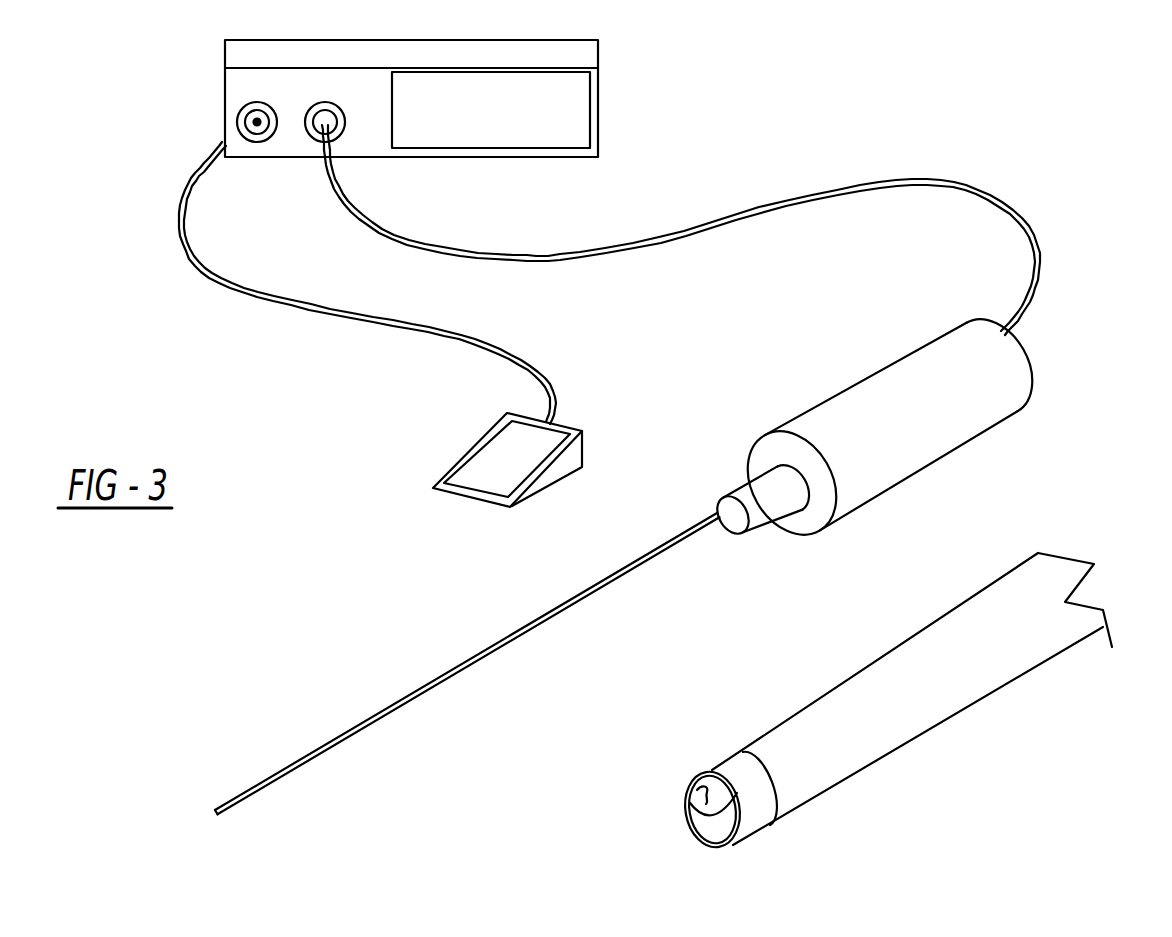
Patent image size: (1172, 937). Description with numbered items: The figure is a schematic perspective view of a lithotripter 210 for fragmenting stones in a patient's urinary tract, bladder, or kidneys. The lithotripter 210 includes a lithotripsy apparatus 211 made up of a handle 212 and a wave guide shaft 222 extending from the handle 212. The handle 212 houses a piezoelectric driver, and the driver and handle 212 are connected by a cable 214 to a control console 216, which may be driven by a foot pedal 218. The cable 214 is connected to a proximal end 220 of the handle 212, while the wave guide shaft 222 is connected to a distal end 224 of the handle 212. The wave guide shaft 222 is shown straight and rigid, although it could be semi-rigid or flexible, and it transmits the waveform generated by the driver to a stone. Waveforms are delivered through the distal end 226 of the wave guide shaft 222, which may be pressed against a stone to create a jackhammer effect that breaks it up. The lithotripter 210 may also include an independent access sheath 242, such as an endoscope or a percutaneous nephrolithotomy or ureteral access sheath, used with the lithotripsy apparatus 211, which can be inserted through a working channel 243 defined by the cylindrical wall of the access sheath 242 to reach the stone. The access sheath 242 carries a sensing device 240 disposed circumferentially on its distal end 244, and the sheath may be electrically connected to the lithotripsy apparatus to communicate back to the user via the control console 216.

The lithotripter 210 is at (1028, 113).
The lithotripsy apparatus 211 is at (445, 663).
The handle 212 is at (880, 414).
The cable 214 is at (725, 221).
The control console 216 is at (598, 100).
The foot pedal 218 is at (503, 459).
The proximal end of the handle 220 is at (1030, 422).
The wave guide shaft 222 is at (445, 663).
The distal end of the handle 224 is at (735, 460).
The distal end of the wave guide shaft 226 is at (213, 813).
The sensing device 240 is at (697, 820).
The access sheath 242 is at (833, 714).
The working channel 243 is at (687, 807).
The distal end of the access sheath 244 is at (768, 834).